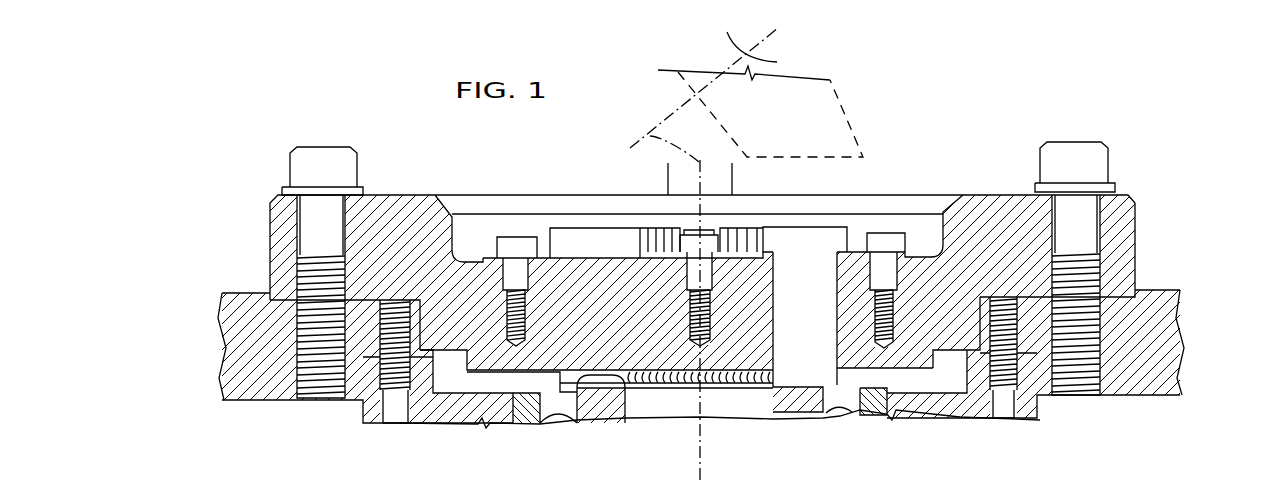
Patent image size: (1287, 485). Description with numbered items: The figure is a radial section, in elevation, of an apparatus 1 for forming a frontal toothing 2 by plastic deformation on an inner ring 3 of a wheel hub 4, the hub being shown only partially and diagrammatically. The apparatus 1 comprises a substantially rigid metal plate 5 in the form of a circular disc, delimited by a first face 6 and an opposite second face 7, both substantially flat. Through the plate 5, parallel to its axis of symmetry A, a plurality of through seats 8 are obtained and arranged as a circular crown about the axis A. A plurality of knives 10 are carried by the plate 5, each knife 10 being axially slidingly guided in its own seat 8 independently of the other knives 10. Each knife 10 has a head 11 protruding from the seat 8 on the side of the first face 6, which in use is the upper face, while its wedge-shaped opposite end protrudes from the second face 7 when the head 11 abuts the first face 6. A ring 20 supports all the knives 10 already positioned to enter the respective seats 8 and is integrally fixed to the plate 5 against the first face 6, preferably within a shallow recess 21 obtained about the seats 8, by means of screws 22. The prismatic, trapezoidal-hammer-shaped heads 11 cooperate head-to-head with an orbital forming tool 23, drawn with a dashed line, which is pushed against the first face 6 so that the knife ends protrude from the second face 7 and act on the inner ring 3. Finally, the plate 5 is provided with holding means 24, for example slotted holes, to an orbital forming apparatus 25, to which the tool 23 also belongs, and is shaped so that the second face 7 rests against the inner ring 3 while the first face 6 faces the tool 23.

The apparatus 1 is at (1203, 143).
The frontal toothing 2 is at (602, 380).
The inner ring 3 is at (632, 412).
The wheel hub 4 is at (836, 421).
The plate 5 is at (979, 255).
The first face 6 is at (420, 192).
The second face 7 is at (476, 383).
The through seats 8 is at (779, 316).
The knives 10 is at (811, 290).
The head 11 is at (570, 228).
The ring 20 is at (598, 257).
The shallow recess 21 is at (481, 194).
The screws 22 is at (517, 352).
The orbital forming tool 23 is at (818, 90).
The holding means 24 is at (304, 229).
The orbital forming apparatus 25 is at (1158, 346).
The axis of symmetry A is at (652, 140).